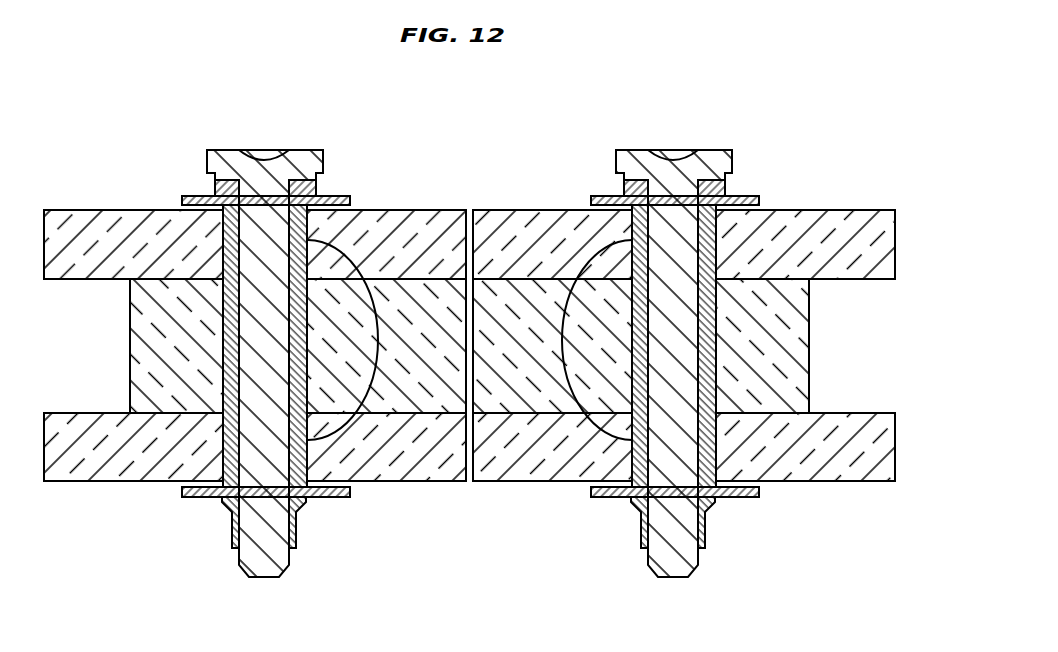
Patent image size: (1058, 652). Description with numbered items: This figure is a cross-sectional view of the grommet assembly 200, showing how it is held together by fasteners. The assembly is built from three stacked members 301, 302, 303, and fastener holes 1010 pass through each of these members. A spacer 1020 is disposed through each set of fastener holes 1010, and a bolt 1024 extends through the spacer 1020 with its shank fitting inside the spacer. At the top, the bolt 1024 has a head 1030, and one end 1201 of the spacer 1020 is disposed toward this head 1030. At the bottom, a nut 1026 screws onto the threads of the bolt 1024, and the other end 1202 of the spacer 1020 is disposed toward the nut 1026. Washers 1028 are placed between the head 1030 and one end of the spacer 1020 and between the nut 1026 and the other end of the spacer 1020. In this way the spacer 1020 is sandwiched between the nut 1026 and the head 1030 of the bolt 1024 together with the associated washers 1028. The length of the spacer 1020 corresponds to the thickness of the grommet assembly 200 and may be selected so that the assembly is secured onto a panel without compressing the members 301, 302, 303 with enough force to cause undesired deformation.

The grommet assembly 200 is at (806, 85).
The member 301 is at (895, 238).
The member 302 is at (895, 440).
The member 303 is at (809, 340).
The fastener holes 1010 is at (310, 327).
The spacer 1020 is at (232, 343).
The bolt 1024 is at (260, 578).
The nut 1026 is at (301, 528).
The washers 1028 is at (215, 188).
The head 1030 is at (230, 150).
The end of spacer 1201 is at (721, 214).
The end of spacer 1202 is at (726, 476).